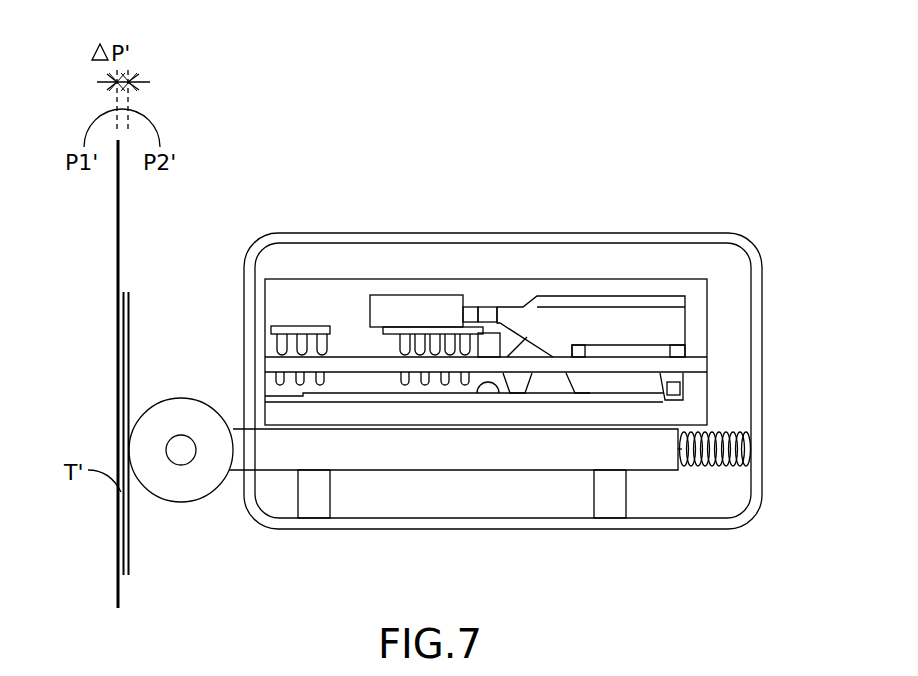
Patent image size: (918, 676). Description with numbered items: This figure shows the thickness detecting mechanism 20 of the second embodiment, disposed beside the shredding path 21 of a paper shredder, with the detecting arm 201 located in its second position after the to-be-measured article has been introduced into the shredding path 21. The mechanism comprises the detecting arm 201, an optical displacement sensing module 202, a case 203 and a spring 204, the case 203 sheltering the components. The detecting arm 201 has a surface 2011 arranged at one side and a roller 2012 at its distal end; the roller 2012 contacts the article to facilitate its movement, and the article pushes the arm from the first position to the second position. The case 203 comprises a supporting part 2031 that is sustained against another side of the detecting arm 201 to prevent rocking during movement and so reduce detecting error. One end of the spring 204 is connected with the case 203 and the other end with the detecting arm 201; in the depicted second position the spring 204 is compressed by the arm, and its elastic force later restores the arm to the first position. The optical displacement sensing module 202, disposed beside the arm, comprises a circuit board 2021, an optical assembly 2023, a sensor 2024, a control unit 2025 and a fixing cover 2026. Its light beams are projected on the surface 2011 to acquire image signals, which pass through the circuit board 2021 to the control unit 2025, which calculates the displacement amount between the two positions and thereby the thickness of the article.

The thickness detecting mechanism 20 is at (511, 179).
The shredding path 21 is at (138, 508).
The detecting arm 201 is at (380, 455).
The surface 2011 is at (448, 430).
The roller 2012 is at (148, 430).
The optical displacement sensing module 202 is at (530, 257).
The circuit board 2021 is at (693, 367).
The optical assembly 2023 is at (374, 386).
The sensor 2024 is at (444, 333).
The control unit 2025 is at (292, 331).
The fixing cover 2026 is at (592, 328).
The case 203 is at (757, 378).
The supporting part 2031 is at (317, 497).
The spring 204 is at (737, 432).